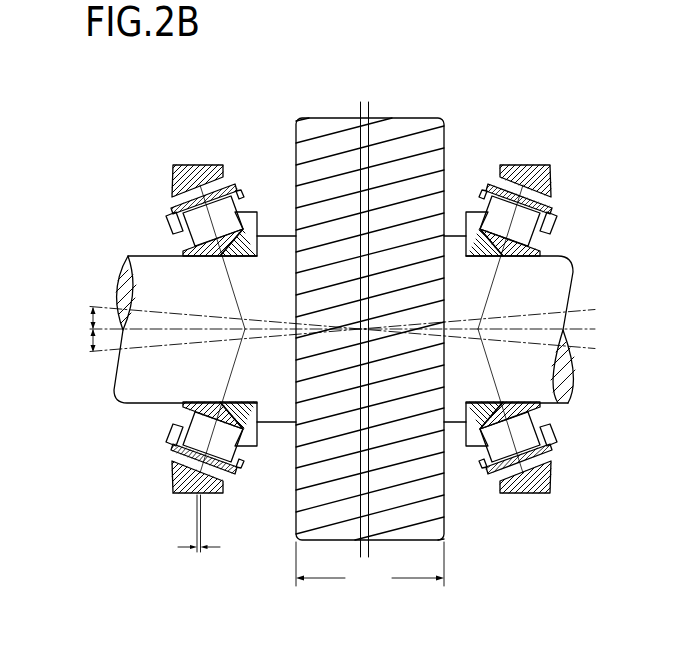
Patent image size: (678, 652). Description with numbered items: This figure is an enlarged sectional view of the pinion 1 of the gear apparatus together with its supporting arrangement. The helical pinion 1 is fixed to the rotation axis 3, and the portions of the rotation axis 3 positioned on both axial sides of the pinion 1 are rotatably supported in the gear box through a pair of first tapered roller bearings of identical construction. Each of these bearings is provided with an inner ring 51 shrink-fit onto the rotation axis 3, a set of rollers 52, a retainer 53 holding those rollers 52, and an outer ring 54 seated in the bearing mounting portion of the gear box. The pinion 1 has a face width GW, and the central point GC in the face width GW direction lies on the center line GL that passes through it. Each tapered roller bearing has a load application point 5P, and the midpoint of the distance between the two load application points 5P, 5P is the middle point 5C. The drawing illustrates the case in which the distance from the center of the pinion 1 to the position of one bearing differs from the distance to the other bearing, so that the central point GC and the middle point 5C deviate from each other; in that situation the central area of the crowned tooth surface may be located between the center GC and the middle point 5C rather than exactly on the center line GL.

The pinion 1 is at (319, 118).
The rotation axis 3 is at (135, 390).
The inner ring 51 is at (544, 243).
The rollers 52 is at (529, 227).
The retainer 53 is at (548, 213).
The outer ring 54 is at (553, 180).
The load application point 5P is at (245, 329).
The middle point 5C is at (359, 323).
The central point GC is at (370, 325).
The center line GL is at (370, 103).
The face width GW is at (370, 566).